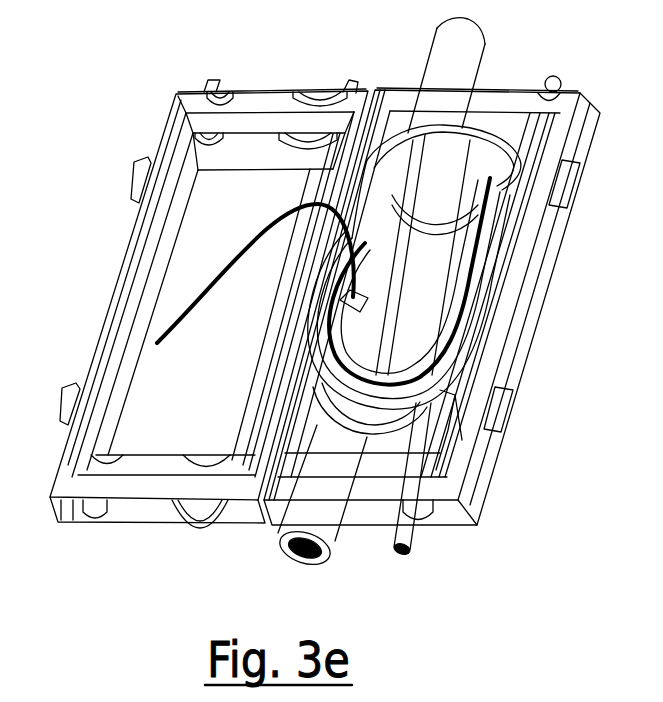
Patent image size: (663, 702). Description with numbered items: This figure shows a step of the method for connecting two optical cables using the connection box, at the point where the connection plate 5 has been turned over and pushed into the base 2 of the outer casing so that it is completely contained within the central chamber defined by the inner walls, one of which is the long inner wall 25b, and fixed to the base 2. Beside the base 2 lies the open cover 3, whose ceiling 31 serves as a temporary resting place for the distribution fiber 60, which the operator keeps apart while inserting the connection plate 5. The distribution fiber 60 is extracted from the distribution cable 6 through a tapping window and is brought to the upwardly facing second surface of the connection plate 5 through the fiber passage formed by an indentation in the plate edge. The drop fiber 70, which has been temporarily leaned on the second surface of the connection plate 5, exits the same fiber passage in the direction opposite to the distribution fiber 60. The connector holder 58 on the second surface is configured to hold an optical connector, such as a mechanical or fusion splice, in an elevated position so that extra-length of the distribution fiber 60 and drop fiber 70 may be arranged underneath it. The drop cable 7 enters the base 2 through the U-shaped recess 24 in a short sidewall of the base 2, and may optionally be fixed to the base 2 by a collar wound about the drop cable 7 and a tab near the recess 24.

The base 2 is at (507, 472).
The cover 3 is at (97, 293).
The connection plate 5 is at (463, 130).
The distribution cable 6 is at (333, 540).
The drop cable 7 is at (410, 553).
The U-shaped recess 24 is at (433, 503).
The inner wall 25b is at (520, 262).
The ceiling 31 is at (173, 413).
The connector holder 58 is at (473, 275).
The distribution fiber 60 is at (243, 250).
The drop fiber 70 is at (353, 373).